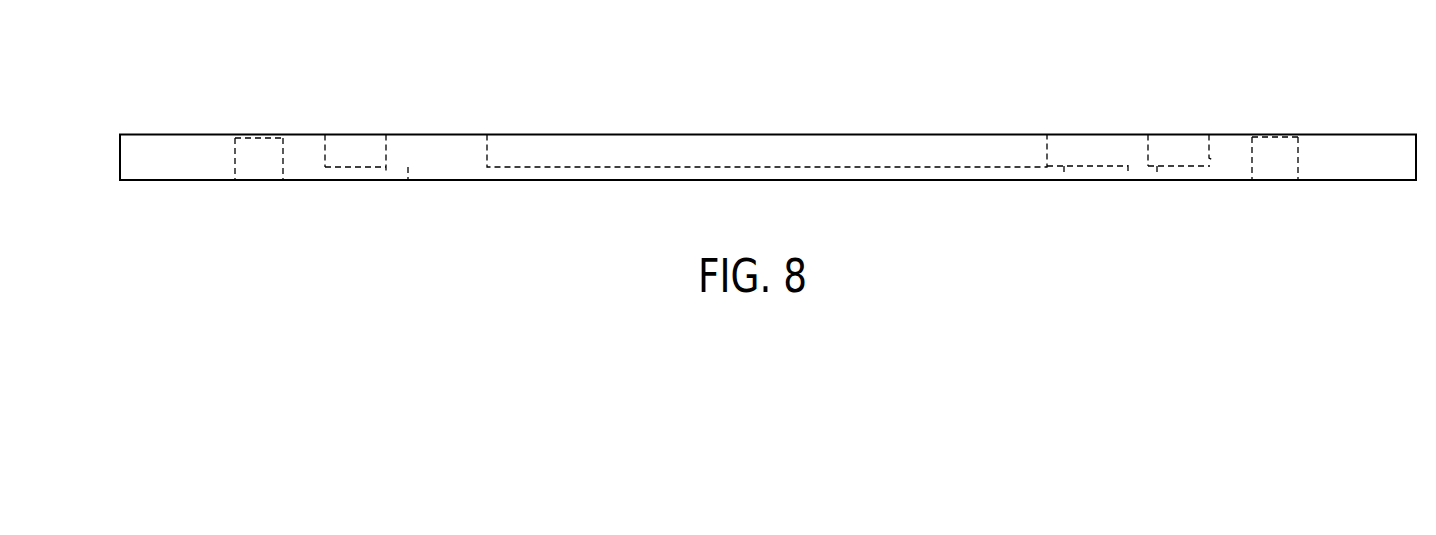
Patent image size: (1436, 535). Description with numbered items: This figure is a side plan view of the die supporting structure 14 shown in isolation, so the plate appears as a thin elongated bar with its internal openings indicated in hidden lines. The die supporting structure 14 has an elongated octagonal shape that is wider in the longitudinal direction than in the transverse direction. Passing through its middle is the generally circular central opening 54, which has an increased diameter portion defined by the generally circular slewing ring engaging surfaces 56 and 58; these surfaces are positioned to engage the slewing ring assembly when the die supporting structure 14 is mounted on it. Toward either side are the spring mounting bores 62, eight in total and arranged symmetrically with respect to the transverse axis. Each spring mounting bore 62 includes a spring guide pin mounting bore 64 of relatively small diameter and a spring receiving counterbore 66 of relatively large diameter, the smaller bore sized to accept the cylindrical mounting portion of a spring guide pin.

The die supporting structure 14 is at (1190, 54).
The central opening 54 is at (988, 147).
The slewing ring engaging surface 56 is at (1062, 181).
The slewing ring engaging surface 58 is at (1122, 176).
The spring mounting bore 62 is at (323, 150).
The spring guide pin mounting bore 64 is at (386, 174).
The spring receiving counterbore 66 is at (372, 141).